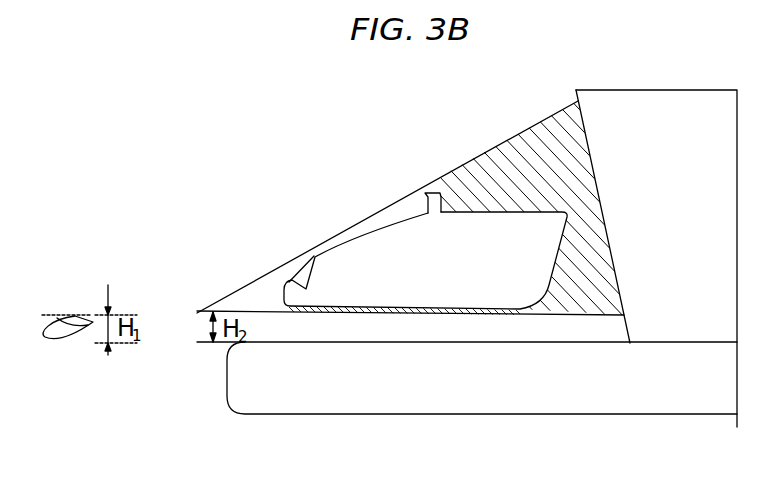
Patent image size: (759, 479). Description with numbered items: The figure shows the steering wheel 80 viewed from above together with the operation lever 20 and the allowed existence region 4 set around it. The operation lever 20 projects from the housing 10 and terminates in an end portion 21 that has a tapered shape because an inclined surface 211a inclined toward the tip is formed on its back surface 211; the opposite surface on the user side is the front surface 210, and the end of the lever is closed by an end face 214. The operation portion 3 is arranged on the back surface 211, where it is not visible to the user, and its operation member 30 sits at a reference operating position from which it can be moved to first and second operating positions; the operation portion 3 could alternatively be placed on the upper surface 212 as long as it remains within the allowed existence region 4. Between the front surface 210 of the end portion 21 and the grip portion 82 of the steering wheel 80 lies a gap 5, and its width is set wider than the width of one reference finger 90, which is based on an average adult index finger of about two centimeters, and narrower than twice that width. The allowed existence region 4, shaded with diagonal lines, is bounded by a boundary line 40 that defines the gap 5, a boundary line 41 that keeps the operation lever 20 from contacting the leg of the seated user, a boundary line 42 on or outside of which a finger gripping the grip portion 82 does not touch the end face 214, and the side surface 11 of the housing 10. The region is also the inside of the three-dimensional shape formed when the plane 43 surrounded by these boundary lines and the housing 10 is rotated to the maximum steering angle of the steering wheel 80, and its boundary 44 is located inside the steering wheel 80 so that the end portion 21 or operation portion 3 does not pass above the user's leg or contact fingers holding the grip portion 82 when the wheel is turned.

The housing 10 is at (699, 107).
The side surface 11 is at (617, 275).
The operation lever 20 is at (450, 271).
The end portion 21 is at (572, 207).
The back surface 211 is at (489, 212).
The inclined surface 211a is at (360, 235).
The upper surface 212 is at (541, 227).
The end face 214 is at (285, 280).
The operation portion 3 is at (436, 189).
The allowed existence region 4 is at (403, 200).
The operation member 30 is at (427, 193).
The boundary line 40 is at (550, 292).
The boundary line 41 is at (561, 115).
The boundary line 42 is at (307, 332).
The plane 43 is at (546, 130).
The boundary 44 is at (287, 306).
The gap 5 is at (393, 322).
The front surface 210 is at (366, 313).
The steering wheel 80 is at (275, 414).
The grip portion 82 is at (685, 397).
The finger 90 is at (52, 318).